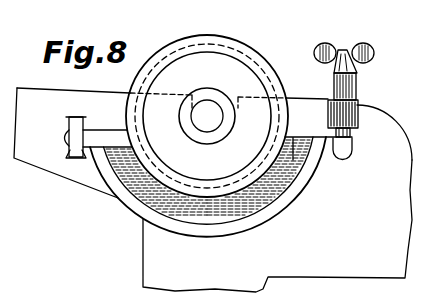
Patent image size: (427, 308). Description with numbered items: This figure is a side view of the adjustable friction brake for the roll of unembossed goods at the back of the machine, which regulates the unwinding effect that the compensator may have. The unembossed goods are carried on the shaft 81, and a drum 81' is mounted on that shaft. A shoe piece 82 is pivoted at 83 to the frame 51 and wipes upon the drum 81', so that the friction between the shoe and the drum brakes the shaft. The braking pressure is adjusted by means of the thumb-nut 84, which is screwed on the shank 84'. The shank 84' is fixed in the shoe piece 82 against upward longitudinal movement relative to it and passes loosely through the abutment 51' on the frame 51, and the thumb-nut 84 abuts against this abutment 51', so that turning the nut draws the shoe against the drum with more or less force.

The frame 51 is at (213, 190).
The abutment 51' is at (348, 128).
The shaft 81 is at (213, 116).
The drum 81' is at (207, 116).
The shoe piece 82 is at (217, 227).
The pivot 83 is at (73, 153).
The thumb-nut 84 is at (358, 71).
The shank 84' is at (373, 141).